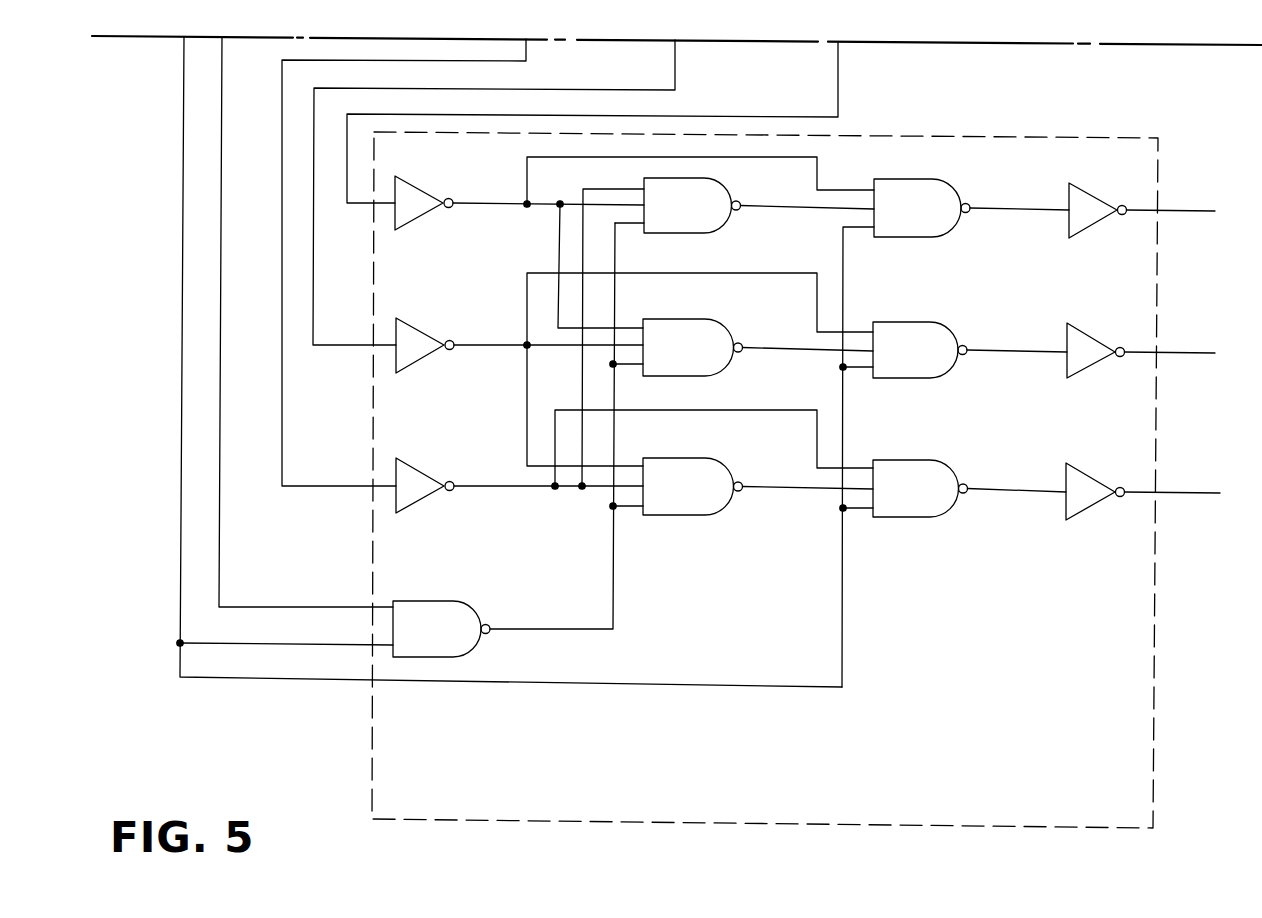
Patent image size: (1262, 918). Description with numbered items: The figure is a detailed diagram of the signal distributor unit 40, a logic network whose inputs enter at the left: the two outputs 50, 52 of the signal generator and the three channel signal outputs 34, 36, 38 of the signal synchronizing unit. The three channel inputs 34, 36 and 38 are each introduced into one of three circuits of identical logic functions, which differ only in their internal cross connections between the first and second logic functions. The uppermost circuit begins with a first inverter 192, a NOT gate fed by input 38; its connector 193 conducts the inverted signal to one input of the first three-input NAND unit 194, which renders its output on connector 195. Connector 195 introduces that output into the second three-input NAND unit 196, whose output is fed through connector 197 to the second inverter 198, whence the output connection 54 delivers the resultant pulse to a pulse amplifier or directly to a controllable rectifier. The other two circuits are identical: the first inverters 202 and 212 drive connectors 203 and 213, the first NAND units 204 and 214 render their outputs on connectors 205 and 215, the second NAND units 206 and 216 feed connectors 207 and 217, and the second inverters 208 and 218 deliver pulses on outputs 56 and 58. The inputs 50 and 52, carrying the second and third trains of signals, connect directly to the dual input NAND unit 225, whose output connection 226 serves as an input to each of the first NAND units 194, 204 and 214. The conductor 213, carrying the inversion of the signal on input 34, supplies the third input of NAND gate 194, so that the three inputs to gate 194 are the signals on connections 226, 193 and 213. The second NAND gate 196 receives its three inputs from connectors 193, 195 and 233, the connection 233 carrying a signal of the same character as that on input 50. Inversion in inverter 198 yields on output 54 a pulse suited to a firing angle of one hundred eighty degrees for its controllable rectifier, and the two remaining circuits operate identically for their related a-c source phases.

The channel signal input 34 is at (526, 50).
The channel signal input 36 is at (675, 72).
The channel signal input 38 is at (838, 75).
The signal distributor unit 40 is at (1158, 152).
The signal generator output 50 is at (184, 64).
The signal generator output 52 is at (255, 57).
The output connection 54 is at (1197, 213).
The output connection 56 is at (1197, 356).
The output connection 58 is at (1197, 493).
The first inverter 192 is at (430, 187).
The connector 193 is at (556, 204).
The first three-input NAND unit 194 is at (732, 194).
The connector 195 is at (786, 209).
The second three-input NAND unit 196 is at (957, 191).
The connector 197 is at (1017, 212).
The second inverter 198 is at (1094, 192).
The first inverter 202 is at (429, 333).
The connector 203 is at (493, 345).
The first NAND unit 204 is at (712, 330).
The connector 205 is at (784, 352).
The second NAND unit 206 is at (935, 326).
The connector 207 is at (1031, 355).
The second inverter 208 is at (1096, 337).
The first inverter 212 is at (424, 472).
The conductor 213 is at (492, 490).
The first NAND unit 214 is at (713, 463).
The connector 215 is at (773, 490).
The second NAND unit 216 is at (933, 463).
The connector 217 is at (1011, 495).
The second inverter 218 is at (1096, 478).
The dual input NAND unit 225 is at (435, 607).
The output connection 226 is at (610, 608).
The connection 233 is at (840, 630).